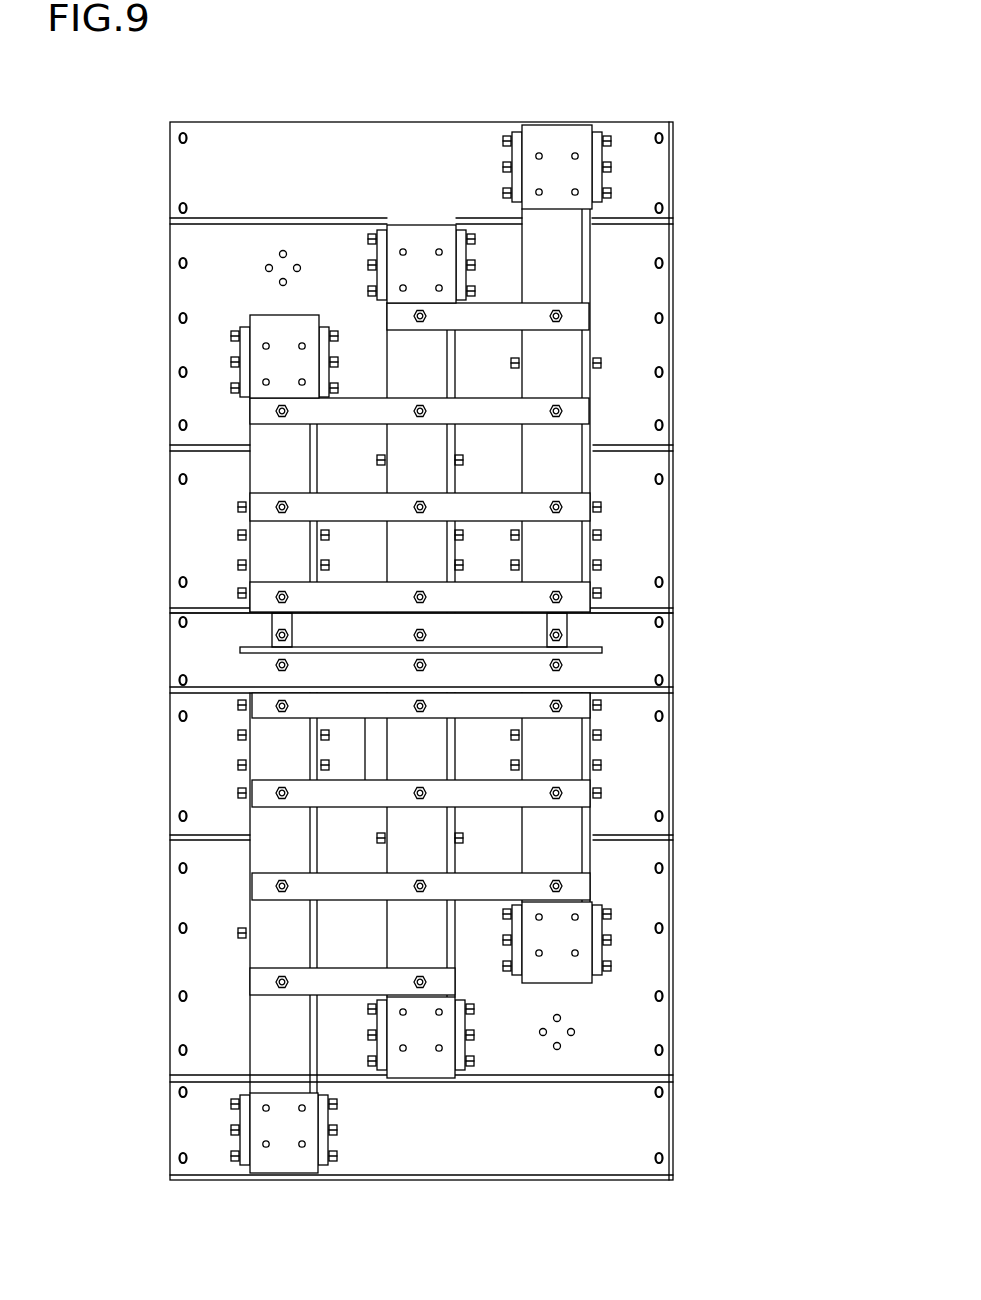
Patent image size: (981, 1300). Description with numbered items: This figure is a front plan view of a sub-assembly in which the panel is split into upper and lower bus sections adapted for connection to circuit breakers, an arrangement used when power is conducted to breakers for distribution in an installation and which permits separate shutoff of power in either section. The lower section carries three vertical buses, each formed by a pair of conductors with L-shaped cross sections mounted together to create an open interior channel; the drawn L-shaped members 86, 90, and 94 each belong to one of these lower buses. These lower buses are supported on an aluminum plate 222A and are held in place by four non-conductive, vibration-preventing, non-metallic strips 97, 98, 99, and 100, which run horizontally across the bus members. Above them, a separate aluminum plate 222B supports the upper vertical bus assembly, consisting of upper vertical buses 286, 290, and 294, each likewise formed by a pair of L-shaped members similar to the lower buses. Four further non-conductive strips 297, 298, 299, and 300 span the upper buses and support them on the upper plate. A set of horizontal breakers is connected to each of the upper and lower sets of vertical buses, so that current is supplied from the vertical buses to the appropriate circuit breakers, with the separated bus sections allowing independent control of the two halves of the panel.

The L-shaped member 86 is at (298, 848).
The L-shaped member 90 is at (434, 757).
The L-shaped member 94 is at (567, 756).
The non-conductive vibration-preventing non-metallic strip 97 is at (262, 703).
The non-conductive vibration-preventing non-metallic strip 98 is at (265, 790).
The non-conductive vibration-preventing non-metallic strip 99 is at (258, 880).
The non-conductive vibration-preventing non-metallic strip 100 is at (265, 990).
The aluminum plate 222A is at (643, 760).
The aluminum plate 222B is at (658, 412).
The upper vertical bus 286 is at (290, 432).
The upper vertical bus 290 is at (423, 550).
The upper vertical bus 294 is at (560, 550).
The non-conductive strip 297 is at (520, 590).
The non-conductive strip 298 is at (580, 510).
The non-conductive strip 299 is at (580, 410).
The non-conductive strip 300 is at (578, 323).